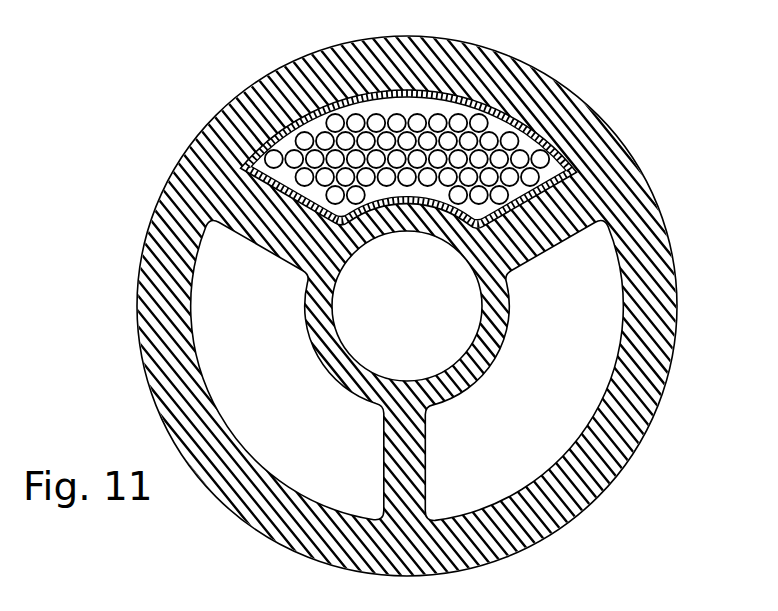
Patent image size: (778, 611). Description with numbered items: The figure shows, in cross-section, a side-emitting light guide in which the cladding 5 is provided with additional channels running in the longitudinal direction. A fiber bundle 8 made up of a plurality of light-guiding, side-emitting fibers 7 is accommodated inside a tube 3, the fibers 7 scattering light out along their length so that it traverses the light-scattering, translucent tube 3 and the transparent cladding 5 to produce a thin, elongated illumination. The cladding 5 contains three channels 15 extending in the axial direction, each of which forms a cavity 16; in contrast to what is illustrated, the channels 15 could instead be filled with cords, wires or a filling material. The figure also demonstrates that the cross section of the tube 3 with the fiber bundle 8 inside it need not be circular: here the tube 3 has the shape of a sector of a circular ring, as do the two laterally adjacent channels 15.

The tube 3 is at (523, 120).
The cladding 5 is at (643, 180).
The side-emitting fibers 7 is at (285, 152).
The fiber bundle 8 is at (307, 206).
The channel 15 is at (433, 338).
The cavity 16 is at (358, 462).